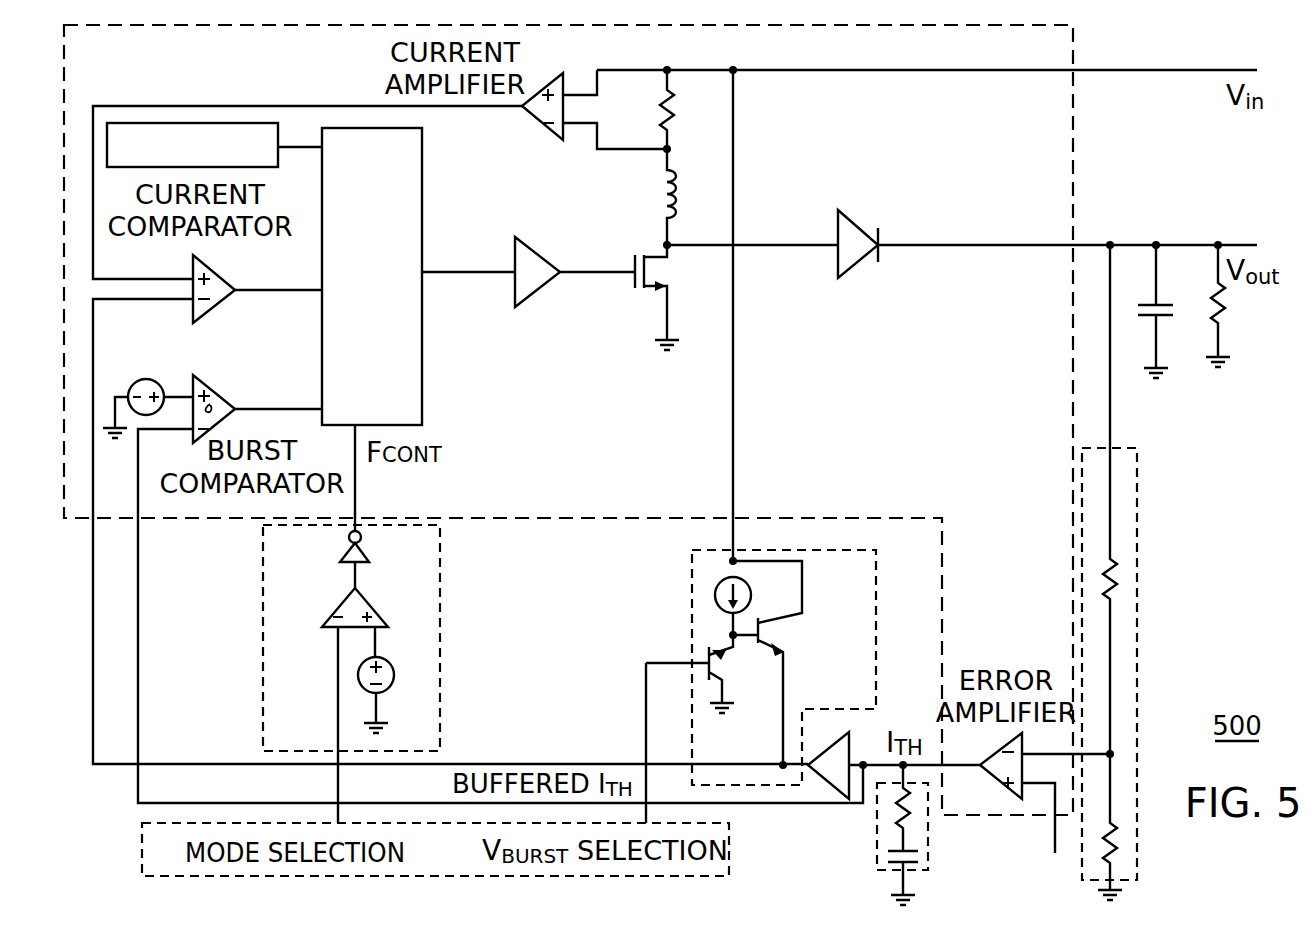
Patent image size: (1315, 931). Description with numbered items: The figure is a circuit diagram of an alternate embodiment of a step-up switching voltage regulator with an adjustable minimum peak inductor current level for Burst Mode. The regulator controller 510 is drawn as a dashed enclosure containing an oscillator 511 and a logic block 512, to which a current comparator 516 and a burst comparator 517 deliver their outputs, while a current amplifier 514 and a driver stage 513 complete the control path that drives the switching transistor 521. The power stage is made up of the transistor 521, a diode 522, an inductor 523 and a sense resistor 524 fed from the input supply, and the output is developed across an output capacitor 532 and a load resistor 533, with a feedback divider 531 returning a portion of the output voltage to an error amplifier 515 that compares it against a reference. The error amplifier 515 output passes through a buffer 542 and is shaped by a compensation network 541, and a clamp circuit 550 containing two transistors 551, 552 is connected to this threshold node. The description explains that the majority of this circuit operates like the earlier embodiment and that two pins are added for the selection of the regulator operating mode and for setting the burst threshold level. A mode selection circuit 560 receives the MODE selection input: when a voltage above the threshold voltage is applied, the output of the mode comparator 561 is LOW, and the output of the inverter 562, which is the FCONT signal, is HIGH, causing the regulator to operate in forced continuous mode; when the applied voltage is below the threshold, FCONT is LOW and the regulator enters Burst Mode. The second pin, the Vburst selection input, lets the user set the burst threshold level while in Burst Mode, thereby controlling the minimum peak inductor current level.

The regulator controller 510 is at (1073, 173).
The oscillator 511 is at (167, 123).
The logic circuit 512 is at (352, 128).
The driver amplifier 513 is at (521, 240).
The current amplifier 514 is at (535, 118).
The error amplifier 515 is at (986, 772).
The current comparator 516 is at (228, 297).
The burst comparator 517 is at (212, 394).
The switching transistor 521 is at (655, 267).
The diode 522 is at (862, 228).
The inductor 523 is at (690, 196).
The sense resistor 524 is at (663, 100).
The feedback resistor divider 531 is at (1137, 578).
The output capacitor 532 is at (1160, 318).
The load resistor 533 is at (1222, 326).
The compensation network 541 is at (877, 858).
The buffer amplifier 542 is at (816, 780).
The clamp circuit 550 is at (761, 623).
The PNP transistor 551 is at (716, 665).
The NPN transistor 552 is at (770, 626).
The mode selection circuit 560 is at (335, 638).
The mode comparator 561 is at (380, 618).
The inverter 562 is at (369, 558).